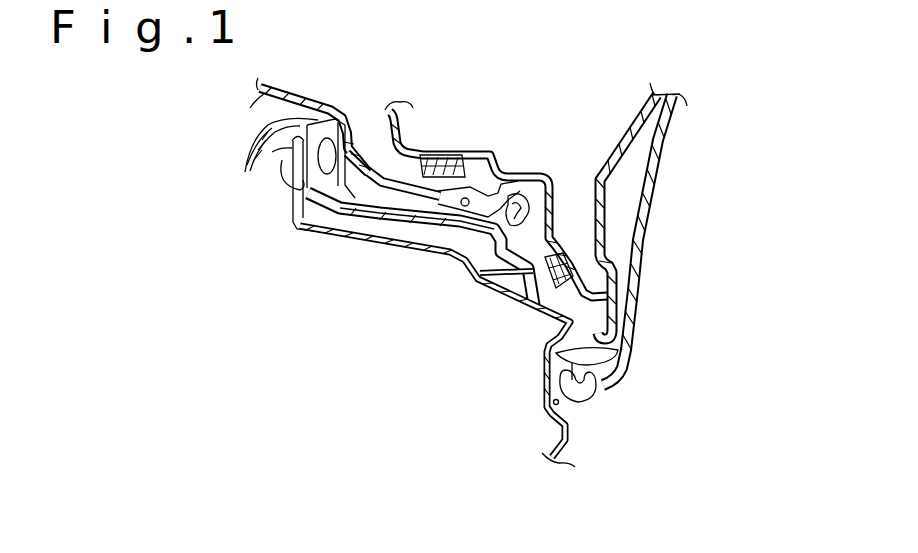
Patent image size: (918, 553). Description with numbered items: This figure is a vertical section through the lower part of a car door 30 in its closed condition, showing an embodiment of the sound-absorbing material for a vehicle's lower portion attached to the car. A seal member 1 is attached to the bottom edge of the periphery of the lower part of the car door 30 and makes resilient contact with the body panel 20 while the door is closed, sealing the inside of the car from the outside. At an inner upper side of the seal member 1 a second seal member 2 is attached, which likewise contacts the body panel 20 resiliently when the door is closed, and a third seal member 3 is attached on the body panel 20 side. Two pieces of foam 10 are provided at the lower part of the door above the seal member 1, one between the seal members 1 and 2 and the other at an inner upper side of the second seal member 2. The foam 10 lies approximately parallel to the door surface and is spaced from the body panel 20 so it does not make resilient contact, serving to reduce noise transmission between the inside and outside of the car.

The seal member 1 is at (595, 390).
The second seal member 2 is at (527, 177).
The third seal member 3 is at (262, 160).
The foam 10 is at (423, 162).
The body panel 20 is at (483, 283).
The car door 30 is at (653, 188).